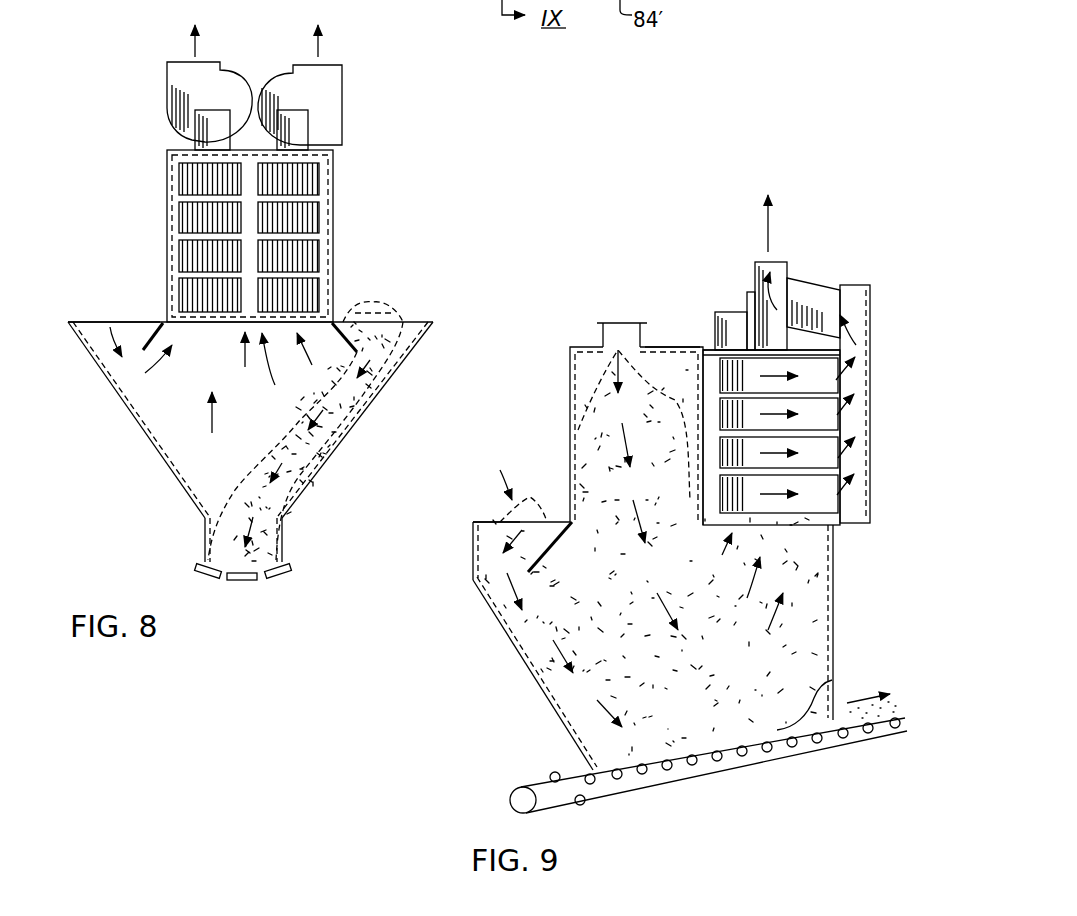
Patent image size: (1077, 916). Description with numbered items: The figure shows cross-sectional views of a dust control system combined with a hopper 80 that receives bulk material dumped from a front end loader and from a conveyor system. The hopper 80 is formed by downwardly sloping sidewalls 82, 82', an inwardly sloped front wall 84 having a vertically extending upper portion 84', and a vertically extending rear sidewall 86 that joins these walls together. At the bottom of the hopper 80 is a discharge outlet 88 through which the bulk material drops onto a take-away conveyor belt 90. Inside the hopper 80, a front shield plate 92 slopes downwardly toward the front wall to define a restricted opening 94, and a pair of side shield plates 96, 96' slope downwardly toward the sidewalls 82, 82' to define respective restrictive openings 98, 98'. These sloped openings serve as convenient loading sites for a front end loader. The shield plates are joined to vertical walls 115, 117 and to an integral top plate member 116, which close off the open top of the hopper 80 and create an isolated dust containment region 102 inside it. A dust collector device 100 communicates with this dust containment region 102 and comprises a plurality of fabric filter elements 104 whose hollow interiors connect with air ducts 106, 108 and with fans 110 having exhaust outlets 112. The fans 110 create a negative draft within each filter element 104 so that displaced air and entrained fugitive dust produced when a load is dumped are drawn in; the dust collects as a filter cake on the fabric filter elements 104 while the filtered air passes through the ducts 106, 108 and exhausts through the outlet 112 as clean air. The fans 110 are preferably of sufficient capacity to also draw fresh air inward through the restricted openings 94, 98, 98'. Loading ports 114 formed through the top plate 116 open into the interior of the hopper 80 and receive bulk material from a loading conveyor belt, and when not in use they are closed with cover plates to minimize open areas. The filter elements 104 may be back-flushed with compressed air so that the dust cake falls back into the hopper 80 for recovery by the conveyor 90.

In FIG. 8, the hopper 80 is at (146, 312).
In FIG. 9, the hopper 80 is at (686, 343).
In FIG. 8, the downwardly sloping sidewall 82 is at (355, 420).
In FIG. 8, the downwardly sloping sidewall 82' is at (138, 420).
In FIG. 9, the inwardly sloped front wall 84 is at (531, 673).
In FIG. 9, the vertically extending upper portion 84' is at (491, 551).
In FIG. 9, the vertically extending rear sidewall 86 is at (836, 610).
In FIG. 8, the discharge outlet 88 is at (263, 547).
In FIG. 9, the discharge outlet 88 is at (812, 700).
In FIG. 8, the conveyor belt 90 is at (288, 578).
In FIG. 9, the conveyor belt 90 is at (607, 786).
In FIG. 9, the front shield plate 92 is at (540, 548).
In FIG. 9, the restricted opening 94 is at (489, 521).
In FIG. 8, the side shield plate 96 is at (370, 303).
In FIG. 8, the side shield plate 96' is at (180, 337).
In FIG. 8, the restrictive opening 98 is at (400, 312).
In FIG. 8, the restrictive opening 98' is at (114, 302).
In FIG. 8, the dust collector device 100 is at (348, 171).
In FIG. 9, the dust collector device 100 is at (876, 287).
In FIG. 8, the isolated dust containment region 102 is at (236, 384).
In FIG. 9, the isolated dust containment region 102 is at (812, 571).
In FIG. 8, the fabric filter element 104 is at (188, 180).
In FIG. 9, the fabric filter element 104 is at (831, 384).
In FIG. 9, the air duct 106 is at (863, 418).
In FIG. 9, the air duct 108 is at (817, 290).
In FIG. 8, the fan 110 is at (300, 128).
In FIG. 9, the fan 110 is at (728, 322).
In FIG. 8, the exhaust outlet 112 is at (333, 63).
In FIG. 9, the exhaust outlet 112 is at (757, 275).
In FIG. 9, the loading port 114 is at (617, 322).
In FIG. 9, the vertical wall 115 is at (570, 413).
In FIG. 9, the top plate member 116 is at (657, 347).
In FIG. 8, the vertical wall 117 is at (167, 250).